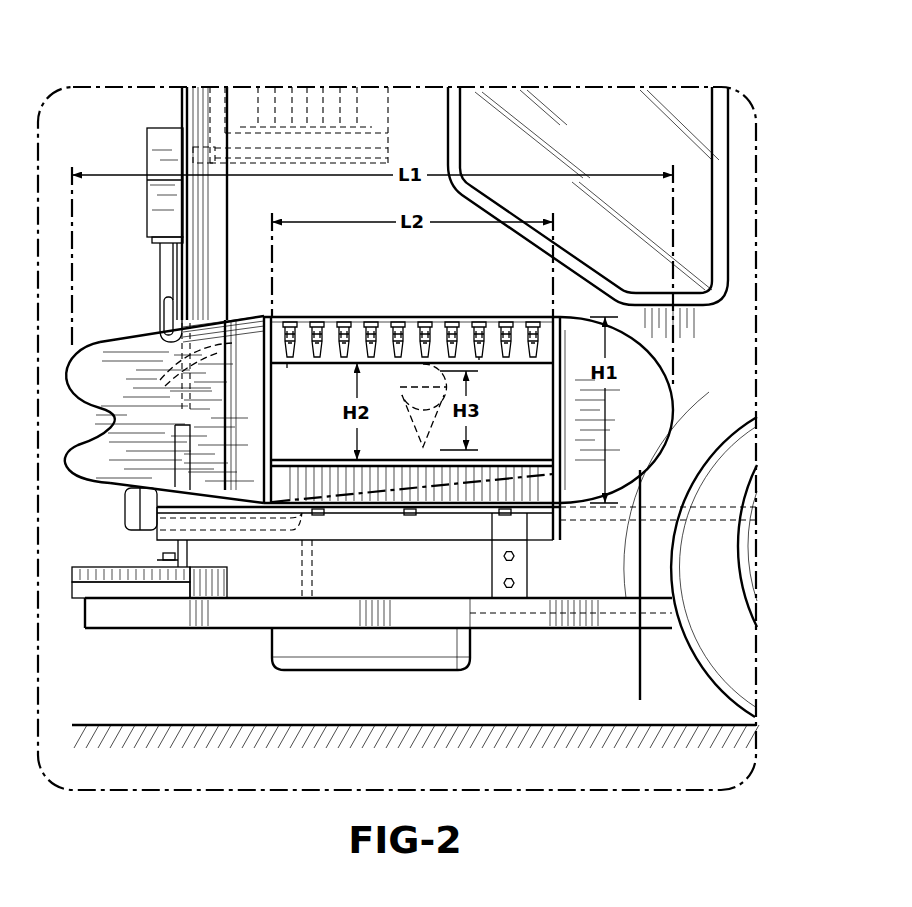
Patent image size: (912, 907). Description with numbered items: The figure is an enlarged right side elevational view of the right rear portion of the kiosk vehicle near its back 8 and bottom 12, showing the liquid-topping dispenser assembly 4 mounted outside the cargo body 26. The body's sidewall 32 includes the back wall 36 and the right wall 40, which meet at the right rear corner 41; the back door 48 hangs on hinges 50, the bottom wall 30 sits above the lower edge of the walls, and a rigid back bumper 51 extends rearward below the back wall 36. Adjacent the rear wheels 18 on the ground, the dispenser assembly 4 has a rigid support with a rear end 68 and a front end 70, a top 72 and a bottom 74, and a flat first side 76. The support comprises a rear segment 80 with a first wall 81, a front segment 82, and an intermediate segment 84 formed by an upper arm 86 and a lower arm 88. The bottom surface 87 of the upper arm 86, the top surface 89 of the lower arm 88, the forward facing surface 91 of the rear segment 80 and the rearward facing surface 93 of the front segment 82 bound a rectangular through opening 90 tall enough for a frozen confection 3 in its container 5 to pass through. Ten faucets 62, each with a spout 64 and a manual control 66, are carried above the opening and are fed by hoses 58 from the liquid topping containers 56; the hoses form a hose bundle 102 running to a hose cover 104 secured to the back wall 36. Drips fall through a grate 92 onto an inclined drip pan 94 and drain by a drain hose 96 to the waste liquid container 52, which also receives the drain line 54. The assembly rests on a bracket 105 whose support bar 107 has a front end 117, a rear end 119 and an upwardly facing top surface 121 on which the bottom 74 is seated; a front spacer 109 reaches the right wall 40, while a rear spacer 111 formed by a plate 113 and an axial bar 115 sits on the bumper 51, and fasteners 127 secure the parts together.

The back 8 is at (90, 118).
The back door 48 is at (180, 110).
The hose cover 104 is at (147, 142).
The back wall 36 is at (183, 215).
The right rear corner 41 is at (207, 263).
The rear segment 80 is at (174, 389).
The first wall 81 is at (117, 340).
The hose bundle 102 is at (163, 298).
The feed lines 58 is at (165, 378).
The rear end 68 is at (58, 365).
The hinges 50 is at (176, 455).
The drain hose 96 is at (125, 508).
The rear end 119 is at (157, 537).
The fasteners 127 is at (163, 556).
The plate 113 is at (75, 572).
The back bumper 51 is at (113, 592).
The rear spacer 111 is at (162, 582).
The axial bar 115 is at (176, 567).
The bracket 105 is at (378, 621).
The support bar 107 is at (253, 545).
The waste liquid container 52 is at (335, 672).
The grate 92 is at (360, 465).
The drip pan 94 is at (400, 480).
The intermediate segment 84 is at (358, 536).
The lower arm 88 is at (452, 500).
The front spacer 109 is at (513, 590).
The bottom 12 is at (583, 636).
The drain line 54 is at (612, 612).
The ground engaging wheels 18 is at (710, 642).
The bottom wall 30 is at (668, 513).
The front end 117 is at (540, 545).
The bottom 74 is at (553, 520).
The top surface 121 is at (480, 505).
The rearward facing surface 93 is at (553, 440).
The top surface 89 is at (337, 458).
The forward facing surface 91 is at (272, 425).
The upper arm 86 is at (330, 355).
The bottom surface 87 is at (287, 366).
The frozen confection 3 is at (406, 376).
The container 5 is at (412, 423).
The spout 64 is at (479, 358).
The faucets 62 is at (317, 318).
The control 66 is at (371, 318).
The top 72 is at (497, 318).
The front segment 82 is at (622, 335).
The liquid-topping dispenser assembly 4 is at (662, 357).
The first side 76 is at (652, 449).
The through opening 90 is at (538, 413).
The front end 70 is at (673, 408).
The liquid topping containers 56 is at (255, 97).
The cargo body 26 is at (574, 173).
The sidewall 32 is at (574, 173).
The right wall 40 is at (420, 120).